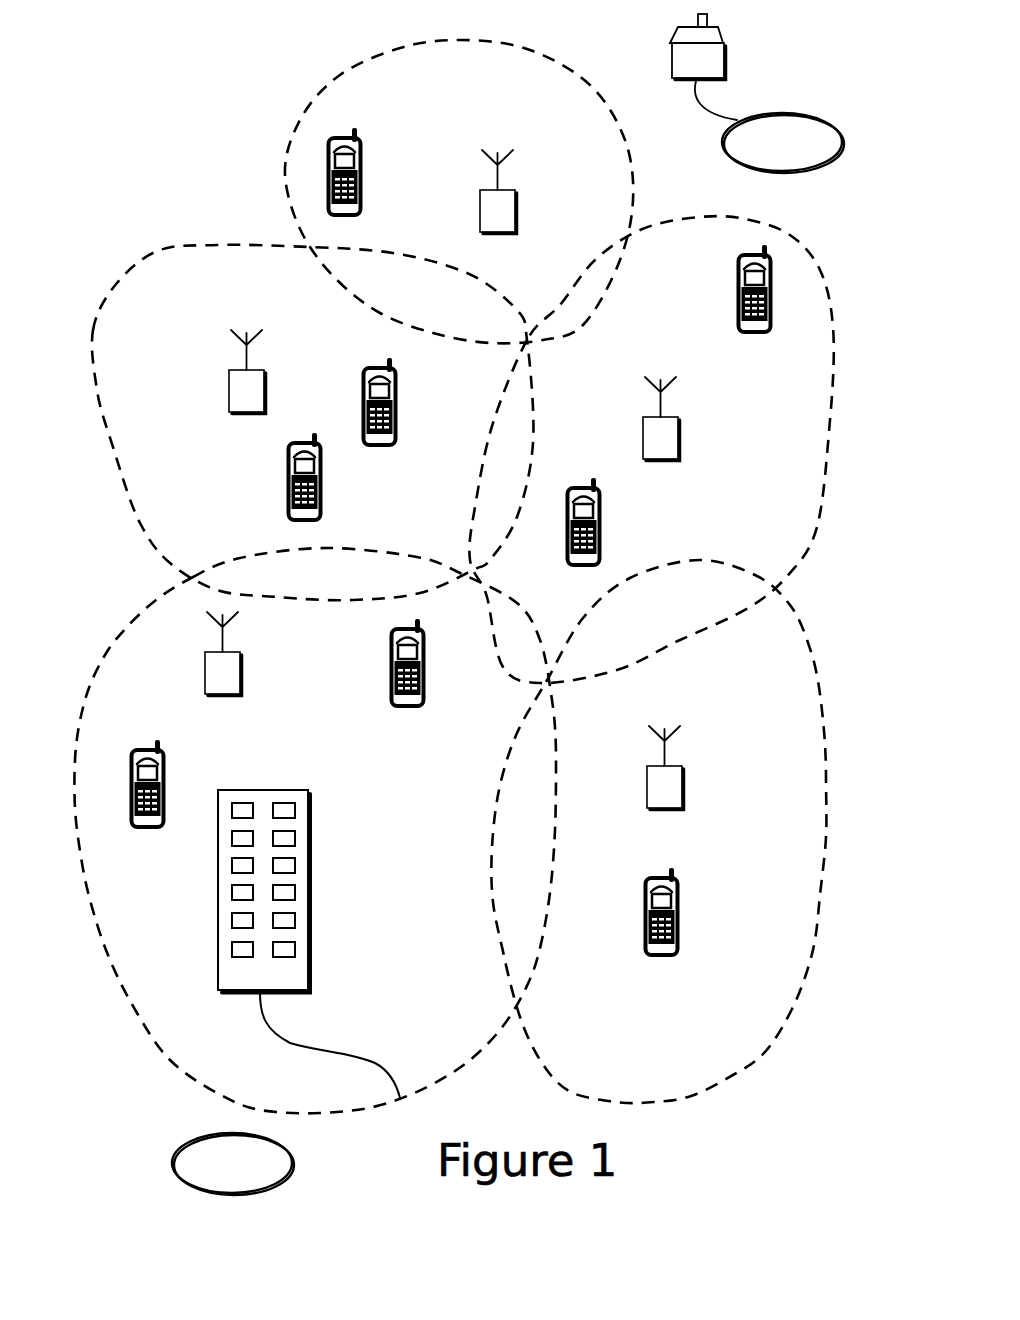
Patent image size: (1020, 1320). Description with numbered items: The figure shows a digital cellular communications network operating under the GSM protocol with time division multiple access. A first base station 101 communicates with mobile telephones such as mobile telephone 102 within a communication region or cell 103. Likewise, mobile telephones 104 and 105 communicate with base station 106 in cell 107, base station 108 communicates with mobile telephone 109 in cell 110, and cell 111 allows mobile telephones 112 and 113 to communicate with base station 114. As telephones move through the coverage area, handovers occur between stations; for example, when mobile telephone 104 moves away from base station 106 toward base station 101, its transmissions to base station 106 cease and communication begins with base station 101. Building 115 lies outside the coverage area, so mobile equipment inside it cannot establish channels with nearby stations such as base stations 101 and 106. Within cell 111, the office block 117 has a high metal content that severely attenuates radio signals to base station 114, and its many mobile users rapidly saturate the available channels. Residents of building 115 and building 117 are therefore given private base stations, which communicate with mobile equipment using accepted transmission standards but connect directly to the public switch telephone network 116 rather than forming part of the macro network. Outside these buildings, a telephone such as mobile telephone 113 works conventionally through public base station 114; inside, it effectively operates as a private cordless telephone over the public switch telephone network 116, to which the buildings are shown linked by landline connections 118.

The first base station 101 is at (503, 203).
The mobile telephone 102 is at (350, 160).
The cell 103 is at (324, 100).
The mobile telephone 104 is at (752, 333).
The mobile telephone 105 is at (598, 505).
The base station 106 is at (663, 448).
The cell 107 is at (663, 237).
The base station 108 is at (672, 785).
The mobile telephone 109 is at (661, 956).
The cell 110 is at (698, 1062).
The cell 111 is at (178, 1022).
The mobile telephone 112 is at (155, 828).
The mobile telephone 113 is at (410, 707).
The base station 114 is at (230, 680).
The building 115 is at (707, 63).
The public switch telephone network 116 is at (785, 152).
The office block 117 is at (290, 920).
The landline connection 118 is at (375, 1060).